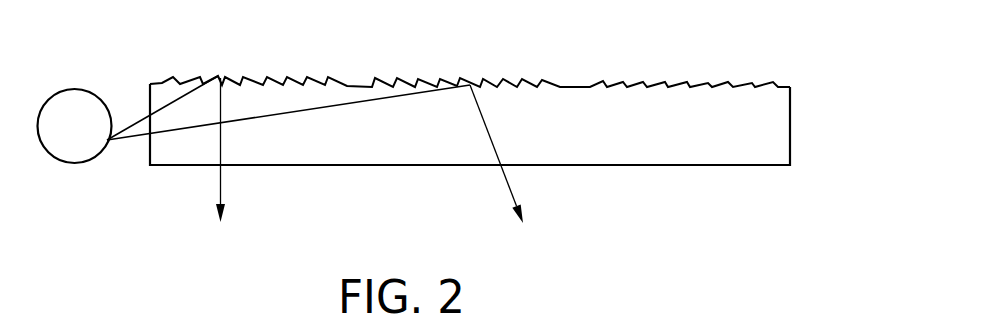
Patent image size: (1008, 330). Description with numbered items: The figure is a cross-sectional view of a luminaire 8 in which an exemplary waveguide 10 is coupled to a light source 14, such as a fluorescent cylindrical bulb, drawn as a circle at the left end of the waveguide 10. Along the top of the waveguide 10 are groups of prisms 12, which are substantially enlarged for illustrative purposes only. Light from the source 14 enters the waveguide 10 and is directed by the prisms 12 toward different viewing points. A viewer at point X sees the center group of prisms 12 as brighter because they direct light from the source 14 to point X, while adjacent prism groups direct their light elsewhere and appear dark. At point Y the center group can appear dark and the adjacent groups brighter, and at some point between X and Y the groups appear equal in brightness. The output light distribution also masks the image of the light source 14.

The luminaire 8 is at (485, 38).
The waveguide 10 is at (777, 129).
The prisms 12 is at (735, 85).
The light source 14 is at (63, 147).